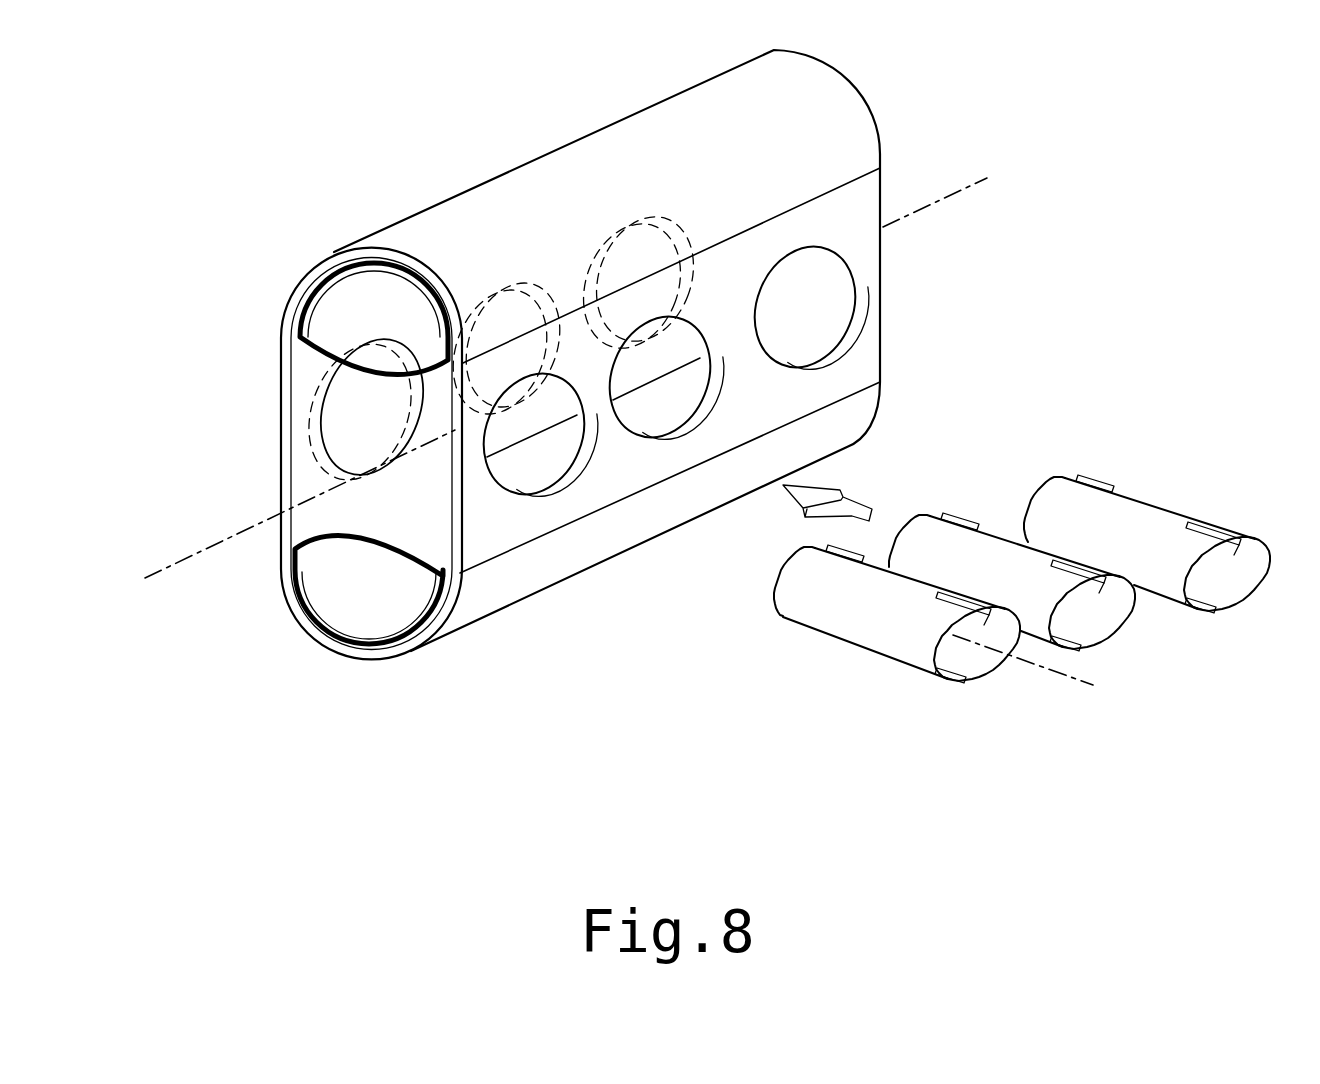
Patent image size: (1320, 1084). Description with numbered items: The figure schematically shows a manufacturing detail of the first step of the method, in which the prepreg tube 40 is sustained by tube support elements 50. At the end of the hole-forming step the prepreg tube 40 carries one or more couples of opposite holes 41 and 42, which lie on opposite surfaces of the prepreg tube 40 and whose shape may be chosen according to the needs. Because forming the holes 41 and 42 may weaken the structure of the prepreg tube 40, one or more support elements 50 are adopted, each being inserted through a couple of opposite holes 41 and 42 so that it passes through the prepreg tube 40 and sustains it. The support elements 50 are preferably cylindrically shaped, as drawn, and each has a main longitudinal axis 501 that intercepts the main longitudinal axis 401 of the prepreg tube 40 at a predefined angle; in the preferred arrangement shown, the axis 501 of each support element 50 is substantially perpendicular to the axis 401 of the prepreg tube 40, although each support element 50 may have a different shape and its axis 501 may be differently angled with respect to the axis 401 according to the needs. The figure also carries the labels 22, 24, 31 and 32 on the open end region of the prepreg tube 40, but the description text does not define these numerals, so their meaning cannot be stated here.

The upper wall portion 22 is at (296, 330).
The lower wall portion 24 is at (301, 620).
The upper opening 31 is at (340, 307).
The lower opening 32 is at (361, 608).
The prepreg tube 40 is at (401, 671).
The hole 41 is at (811, 343).
The hole 42 is at (610, 246).
The main longitudinal axis 401 is at (583, 361).
The tube support element 50 is at (1172, 480).
The main longitudinal axis 501 is at (1057, 680).